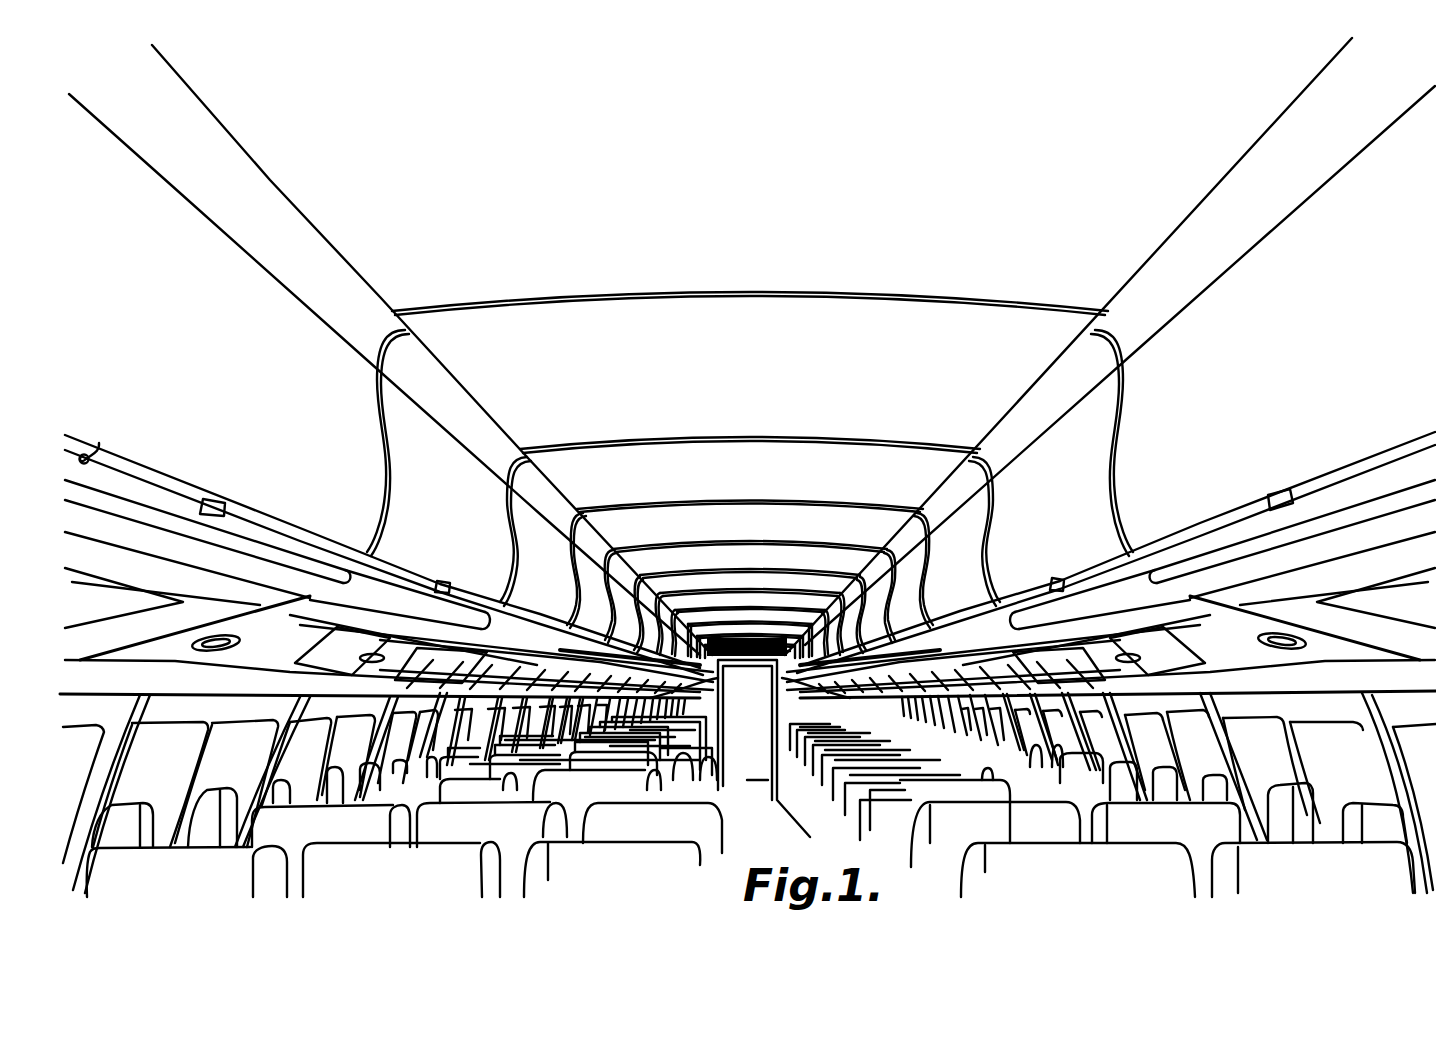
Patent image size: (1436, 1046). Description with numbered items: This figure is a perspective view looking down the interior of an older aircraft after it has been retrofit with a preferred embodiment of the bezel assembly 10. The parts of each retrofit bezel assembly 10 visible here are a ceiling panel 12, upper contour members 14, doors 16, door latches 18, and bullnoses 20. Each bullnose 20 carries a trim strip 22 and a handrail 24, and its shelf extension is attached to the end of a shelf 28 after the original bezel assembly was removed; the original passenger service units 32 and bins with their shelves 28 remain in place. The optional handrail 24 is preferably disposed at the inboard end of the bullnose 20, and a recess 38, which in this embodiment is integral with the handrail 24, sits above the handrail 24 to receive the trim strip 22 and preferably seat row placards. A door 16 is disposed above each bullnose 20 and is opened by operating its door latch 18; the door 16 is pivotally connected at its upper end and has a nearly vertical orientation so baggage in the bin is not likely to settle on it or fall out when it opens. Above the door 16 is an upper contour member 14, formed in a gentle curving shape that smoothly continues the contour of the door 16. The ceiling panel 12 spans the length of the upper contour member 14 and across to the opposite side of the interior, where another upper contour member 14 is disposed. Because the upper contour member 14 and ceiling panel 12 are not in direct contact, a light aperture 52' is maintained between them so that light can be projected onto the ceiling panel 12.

The bezel assembly 10 is at (706, 103).
The ceiling panel 12 is at (492, 274).
The upper contour member 14 is at (1275, 202).
The door 16 is at (1290, 370).
The door latch 18 is at (1279, 494).
The bullnose 20 is at (208, 557).
The trim strip 22 is at (120, 490).
The handrail 24 is at (297, 551).
The shelf 28 is at (148, 643).
The passenger service unit 32 is at (213, 655).
The recess 38 is at (1354, 524).
The light aperture 52' is at (710, 346).